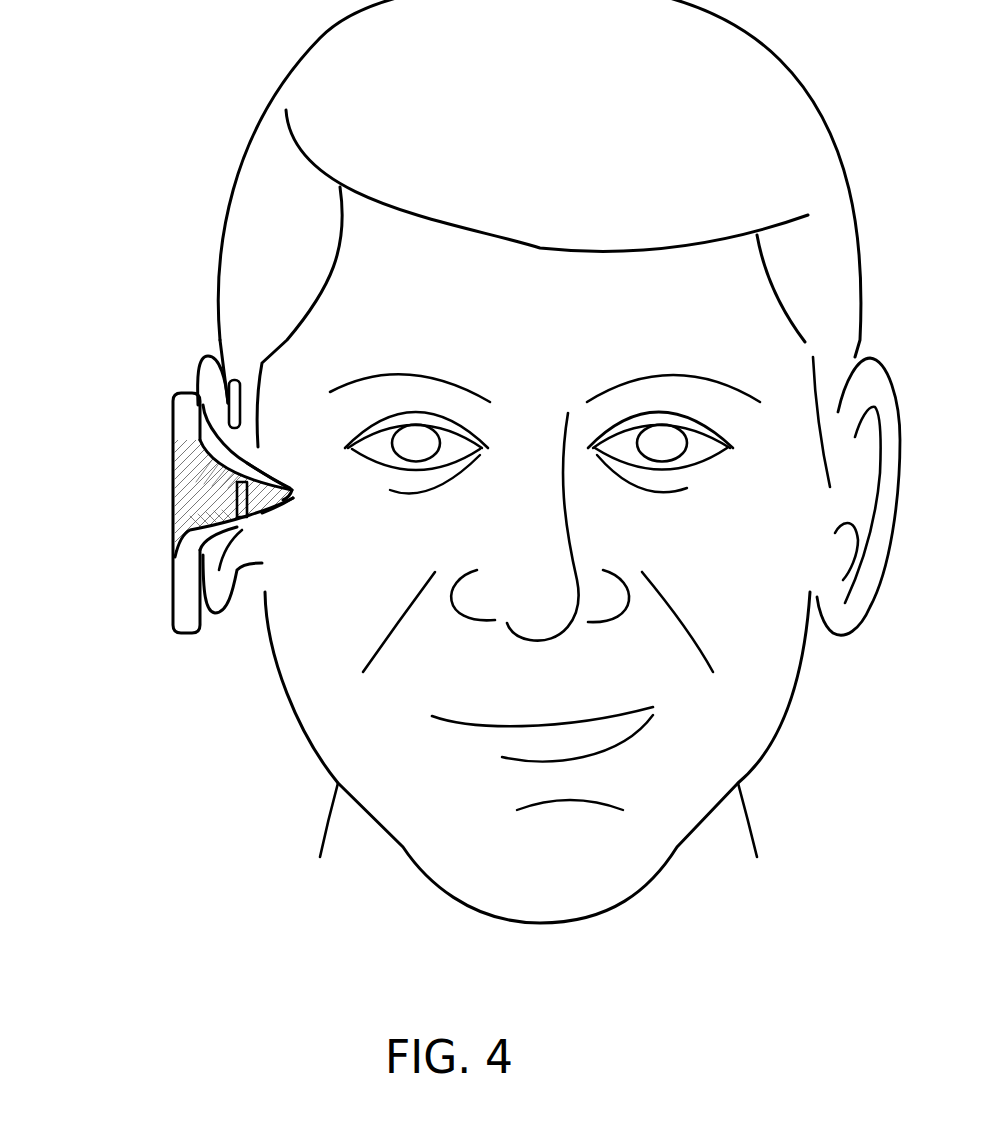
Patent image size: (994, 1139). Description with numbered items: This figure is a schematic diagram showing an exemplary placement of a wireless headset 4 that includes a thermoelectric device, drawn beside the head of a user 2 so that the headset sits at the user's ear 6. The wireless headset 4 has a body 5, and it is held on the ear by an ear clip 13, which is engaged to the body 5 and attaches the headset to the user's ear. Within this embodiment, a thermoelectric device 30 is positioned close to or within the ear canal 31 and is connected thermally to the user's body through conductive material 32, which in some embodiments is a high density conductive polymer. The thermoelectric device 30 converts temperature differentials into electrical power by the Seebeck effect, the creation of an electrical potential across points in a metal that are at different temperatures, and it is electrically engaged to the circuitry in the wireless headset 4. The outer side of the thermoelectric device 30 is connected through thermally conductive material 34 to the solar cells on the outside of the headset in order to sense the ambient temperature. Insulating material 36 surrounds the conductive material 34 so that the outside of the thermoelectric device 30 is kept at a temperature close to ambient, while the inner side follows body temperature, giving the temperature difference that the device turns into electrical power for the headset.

The user 2 is at (222, 241).
The wireless headset 4 is at (128, 583).
The body 5 is at (175, 623).
The ear 6 is at (200, 378).
The ear clip 13 is at (241, 398).
The thermoelectric device 30 is at (242, 500).
The ear canal 31 is at (283, 478).
The conductive material 32 is at (280, 501).
The thermally conductive material 34 is at (187, 500).
The insulating material 36 is at (192, 458).